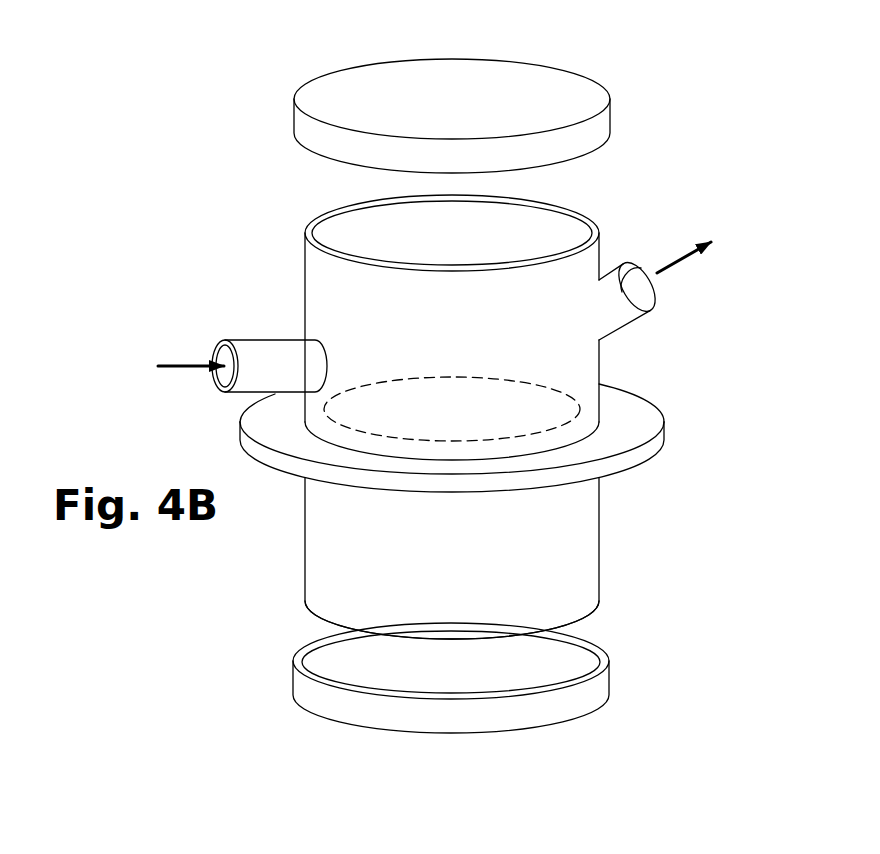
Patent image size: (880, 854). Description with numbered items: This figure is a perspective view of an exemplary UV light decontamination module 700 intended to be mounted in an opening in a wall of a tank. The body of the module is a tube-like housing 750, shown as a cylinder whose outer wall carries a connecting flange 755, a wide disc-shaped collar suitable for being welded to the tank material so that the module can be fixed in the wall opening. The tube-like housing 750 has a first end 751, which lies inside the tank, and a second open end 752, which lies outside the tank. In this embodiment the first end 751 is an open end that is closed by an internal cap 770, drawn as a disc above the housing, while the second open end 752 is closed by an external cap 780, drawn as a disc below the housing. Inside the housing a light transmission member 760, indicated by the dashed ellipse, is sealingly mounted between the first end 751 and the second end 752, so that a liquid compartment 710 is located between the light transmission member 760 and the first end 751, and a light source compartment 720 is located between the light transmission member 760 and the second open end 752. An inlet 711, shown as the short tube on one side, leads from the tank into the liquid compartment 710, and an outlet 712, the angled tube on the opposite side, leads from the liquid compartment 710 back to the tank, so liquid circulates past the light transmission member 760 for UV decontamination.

The UV light decontamination module 700 is at (234, 696).
The liquid compartment 710 is at (527, 242).
The inlet 711 is at (268, 357).
The outlet 712 is at (642, 268).
The light source compartment 720 is at (516, 641).
The housing 750 is at (540, 535).
The first end 751 is at (306, 227).
The second open end 752 is at (306, 609).
The connecting flange 755 is at (632, 425).
The light transmission member 760 is at (515, 400).
The internal cap 770 is at (553, 58).
The external cap 780 is at (592, 729).